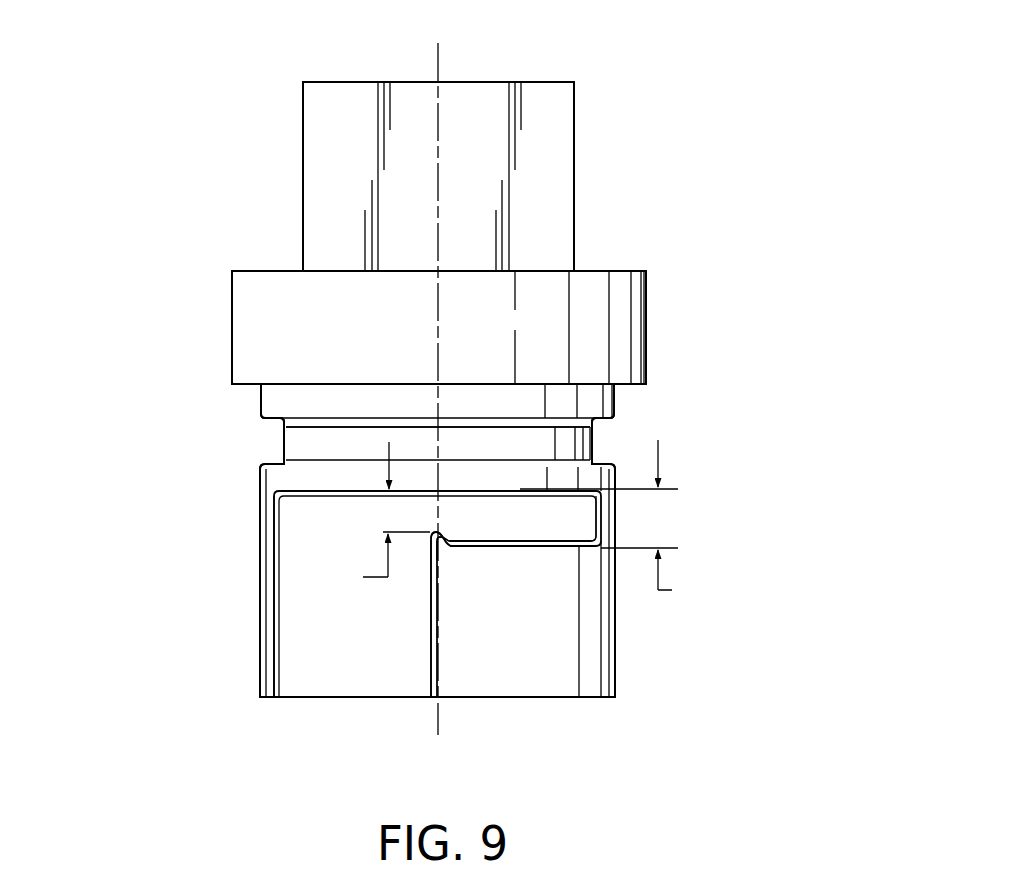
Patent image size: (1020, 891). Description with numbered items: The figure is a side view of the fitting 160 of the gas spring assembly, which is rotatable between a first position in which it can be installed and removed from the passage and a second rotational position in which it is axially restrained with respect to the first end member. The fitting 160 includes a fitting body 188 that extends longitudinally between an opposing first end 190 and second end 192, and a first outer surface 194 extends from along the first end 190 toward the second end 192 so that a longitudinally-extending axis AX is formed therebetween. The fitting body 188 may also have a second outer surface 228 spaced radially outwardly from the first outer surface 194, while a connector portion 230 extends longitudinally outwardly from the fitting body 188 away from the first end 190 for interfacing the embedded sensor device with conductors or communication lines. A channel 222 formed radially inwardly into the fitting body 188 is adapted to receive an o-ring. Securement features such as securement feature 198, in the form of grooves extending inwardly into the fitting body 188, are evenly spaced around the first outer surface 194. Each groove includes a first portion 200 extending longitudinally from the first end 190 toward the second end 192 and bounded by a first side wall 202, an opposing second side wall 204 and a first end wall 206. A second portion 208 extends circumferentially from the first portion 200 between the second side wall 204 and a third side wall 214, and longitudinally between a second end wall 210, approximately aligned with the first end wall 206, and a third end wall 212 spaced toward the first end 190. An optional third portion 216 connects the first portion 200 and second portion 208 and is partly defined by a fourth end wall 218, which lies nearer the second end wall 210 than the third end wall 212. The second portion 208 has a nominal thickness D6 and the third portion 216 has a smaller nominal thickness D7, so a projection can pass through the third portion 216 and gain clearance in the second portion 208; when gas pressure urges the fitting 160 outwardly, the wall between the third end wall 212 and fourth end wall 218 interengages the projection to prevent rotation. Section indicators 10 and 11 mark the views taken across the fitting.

The fitting 160 is at (637, 120).
The connector portion 230 is at (575, 205).
The second outer surface 228 is at (650, 300).
The second end 192 is at (221, 327).
The channel 222 is at (258, 433).
The second end wall 210 is at (497, 490).
The first end wall 206 is at (315, 492).
The fitting body 188 is at (248, 550).
The first end 190 is at (240, 705).
The first side wall 202 is at (276, 672).
The first outer surface 194 is at (503, 675).
The second side wall 204 is at (432, 668).
The first portion 200 is at (337, 657).
The securement feature 198 is at (412, 700).
The third side wall 214 is at (595, 520).
The third end wall 212 is at (510, 548).
The second portion 208 is at (478, 524).
The third portion 216 is at (441, 521).
The fourth end wall 218 is at (441, 548).
The nominal thickness of second portion D6 is at (611, 521).
The nominal thickness of third portion D7 is at (382, 514).
The longitudinally-extending axis AX is at (439, 48).
The section line 10 is at (198, 517).
The section line 11 is at (122, 627).